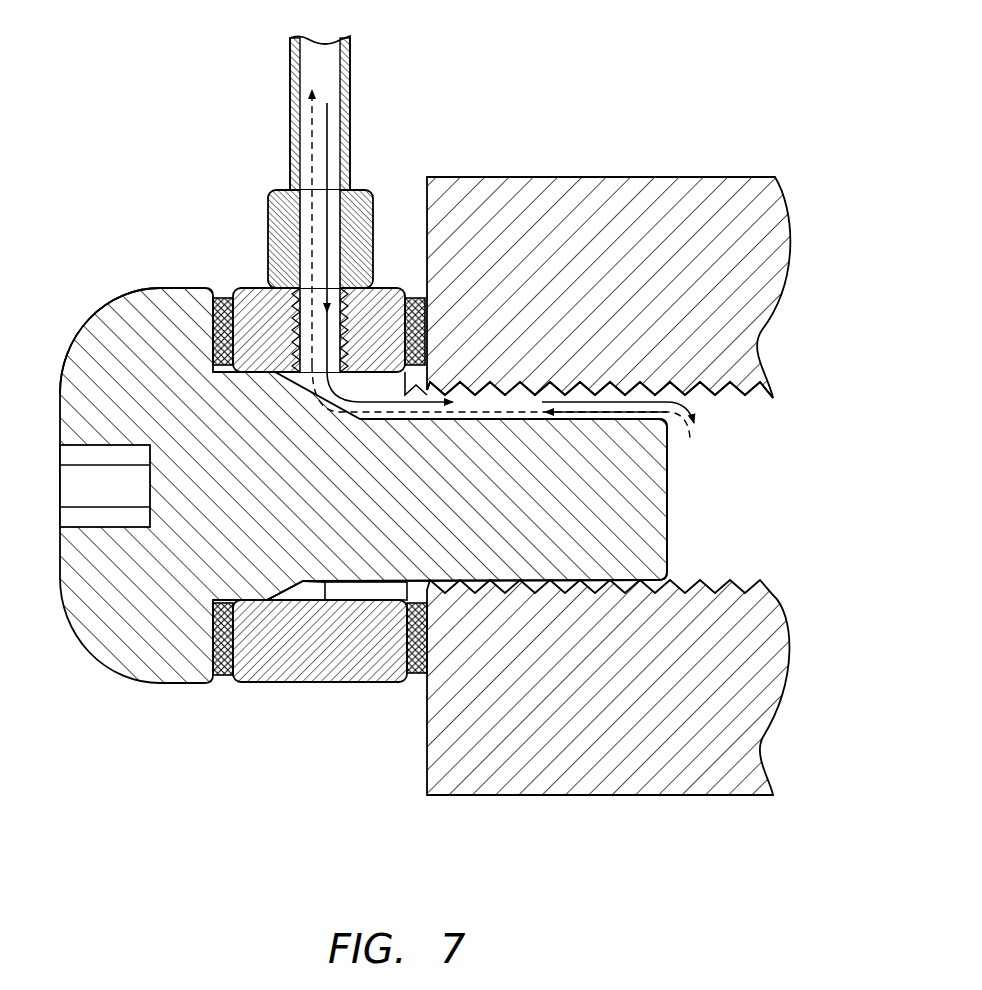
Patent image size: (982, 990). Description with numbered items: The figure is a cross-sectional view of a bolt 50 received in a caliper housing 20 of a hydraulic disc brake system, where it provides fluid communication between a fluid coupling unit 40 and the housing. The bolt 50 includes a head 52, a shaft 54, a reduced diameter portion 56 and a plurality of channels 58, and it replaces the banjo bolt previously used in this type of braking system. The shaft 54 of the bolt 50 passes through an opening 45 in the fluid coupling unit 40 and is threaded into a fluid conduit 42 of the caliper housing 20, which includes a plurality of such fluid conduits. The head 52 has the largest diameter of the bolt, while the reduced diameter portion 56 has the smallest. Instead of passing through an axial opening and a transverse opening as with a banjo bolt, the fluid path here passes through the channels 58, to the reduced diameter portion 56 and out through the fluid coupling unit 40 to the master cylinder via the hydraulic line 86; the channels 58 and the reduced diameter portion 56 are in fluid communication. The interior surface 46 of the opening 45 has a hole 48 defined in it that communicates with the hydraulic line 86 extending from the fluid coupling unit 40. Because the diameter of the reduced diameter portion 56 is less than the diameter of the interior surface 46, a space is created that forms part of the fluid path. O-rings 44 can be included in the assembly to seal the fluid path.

The caliper housing 20 is at (608, 178).
The fluid coupling unit 40 is at (250, 683).
The fluid conduit 42 is at (750, 418).
The o-rings 44 is at (222, 300).
The opening 45 is at (393, 592).
The interior surface 46 is at (348, 595).
The hole 48 is at (318, 375).
The bolt 50 is at (128, 694).
The head 52 is at (107, 315).
The shaft 54 is at (650, 490).
The reduced diameter portion 56 is at (353, 602).
The channels 58 is at (520, 398).
The hydraulic line 86 is at (350, 56).